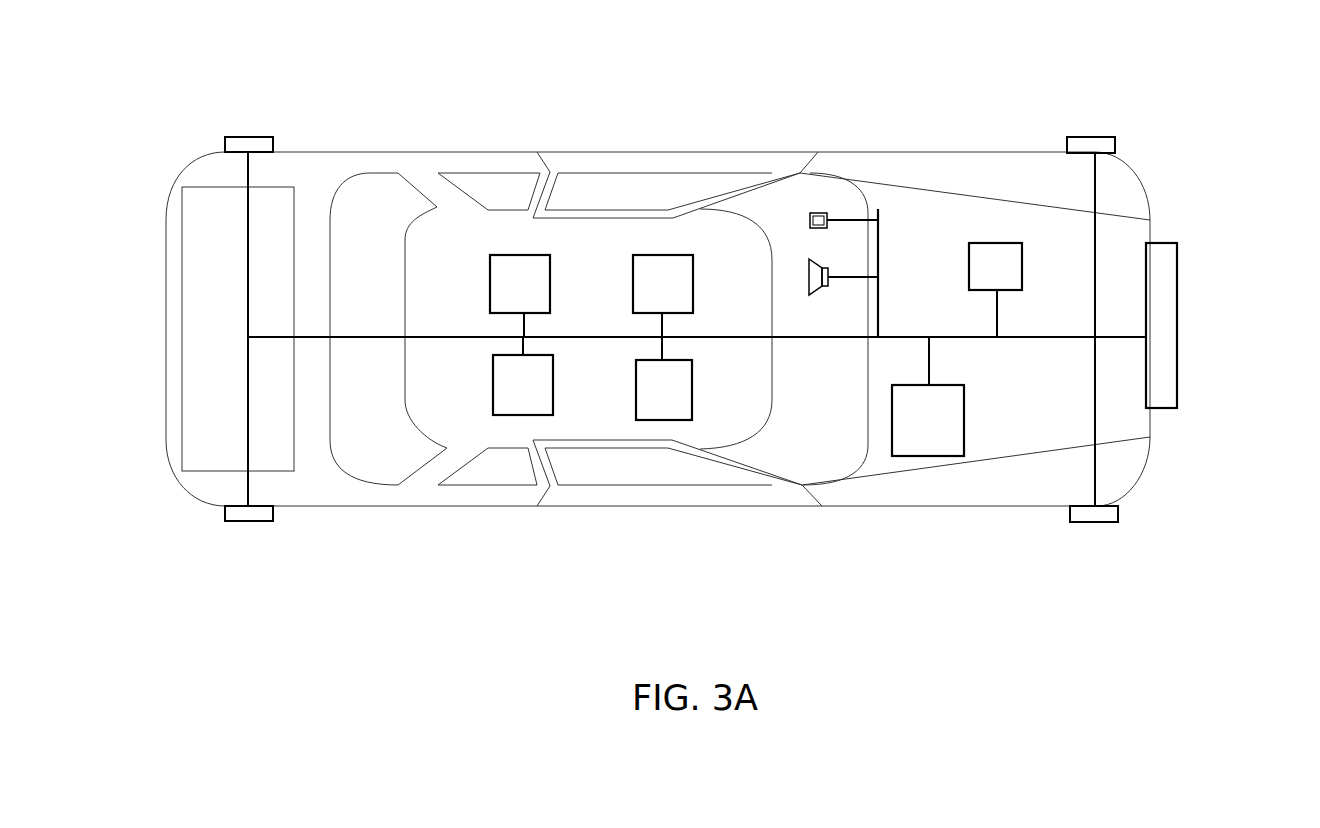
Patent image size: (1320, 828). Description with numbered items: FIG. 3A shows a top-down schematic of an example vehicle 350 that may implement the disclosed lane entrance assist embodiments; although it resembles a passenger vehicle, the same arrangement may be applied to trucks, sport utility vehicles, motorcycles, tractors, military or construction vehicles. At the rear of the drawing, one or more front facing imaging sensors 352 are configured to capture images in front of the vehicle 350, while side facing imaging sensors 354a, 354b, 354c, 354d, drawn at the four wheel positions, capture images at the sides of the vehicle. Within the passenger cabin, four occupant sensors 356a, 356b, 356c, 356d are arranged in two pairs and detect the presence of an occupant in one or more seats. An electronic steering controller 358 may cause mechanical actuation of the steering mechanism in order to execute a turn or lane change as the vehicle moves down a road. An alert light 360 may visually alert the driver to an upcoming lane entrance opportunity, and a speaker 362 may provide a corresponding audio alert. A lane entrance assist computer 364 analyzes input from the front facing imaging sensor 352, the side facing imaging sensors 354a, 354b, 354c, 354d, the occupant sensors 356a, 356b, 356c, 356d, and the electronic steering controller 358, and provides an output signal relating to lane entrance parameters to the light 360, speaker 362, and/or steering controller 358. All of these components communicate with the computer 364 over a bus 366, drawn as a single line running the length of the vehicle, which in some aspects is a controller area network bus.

The vehicle 350 is at (455, 508).
The front facing imaging sensor 352 is at (1182, 326).
The side facing imaging sensor 354a is at (250, 528).
The side facing imaging sensor 354b is at (1097, 523).
The side facing imaging sensor 354c is at (248, 137).
The side facing imaging sensor 354d is at (1093, 135).
The occupant sensor 356a is at (490, 293).
The occupant sensor 356b is at (493, 393).
The occupant sensor 356c is at (633, 298).
The occupant sensor 356d is at (636, 398).
The electronic steering controller 358 is at (1023, 260).
The alert light 360 is at (810, 219).
The speaker 362 is at (810, 278).
The lane entrance assist computer 364 is at (964, 430).
The bus 366 is at (797, 340).